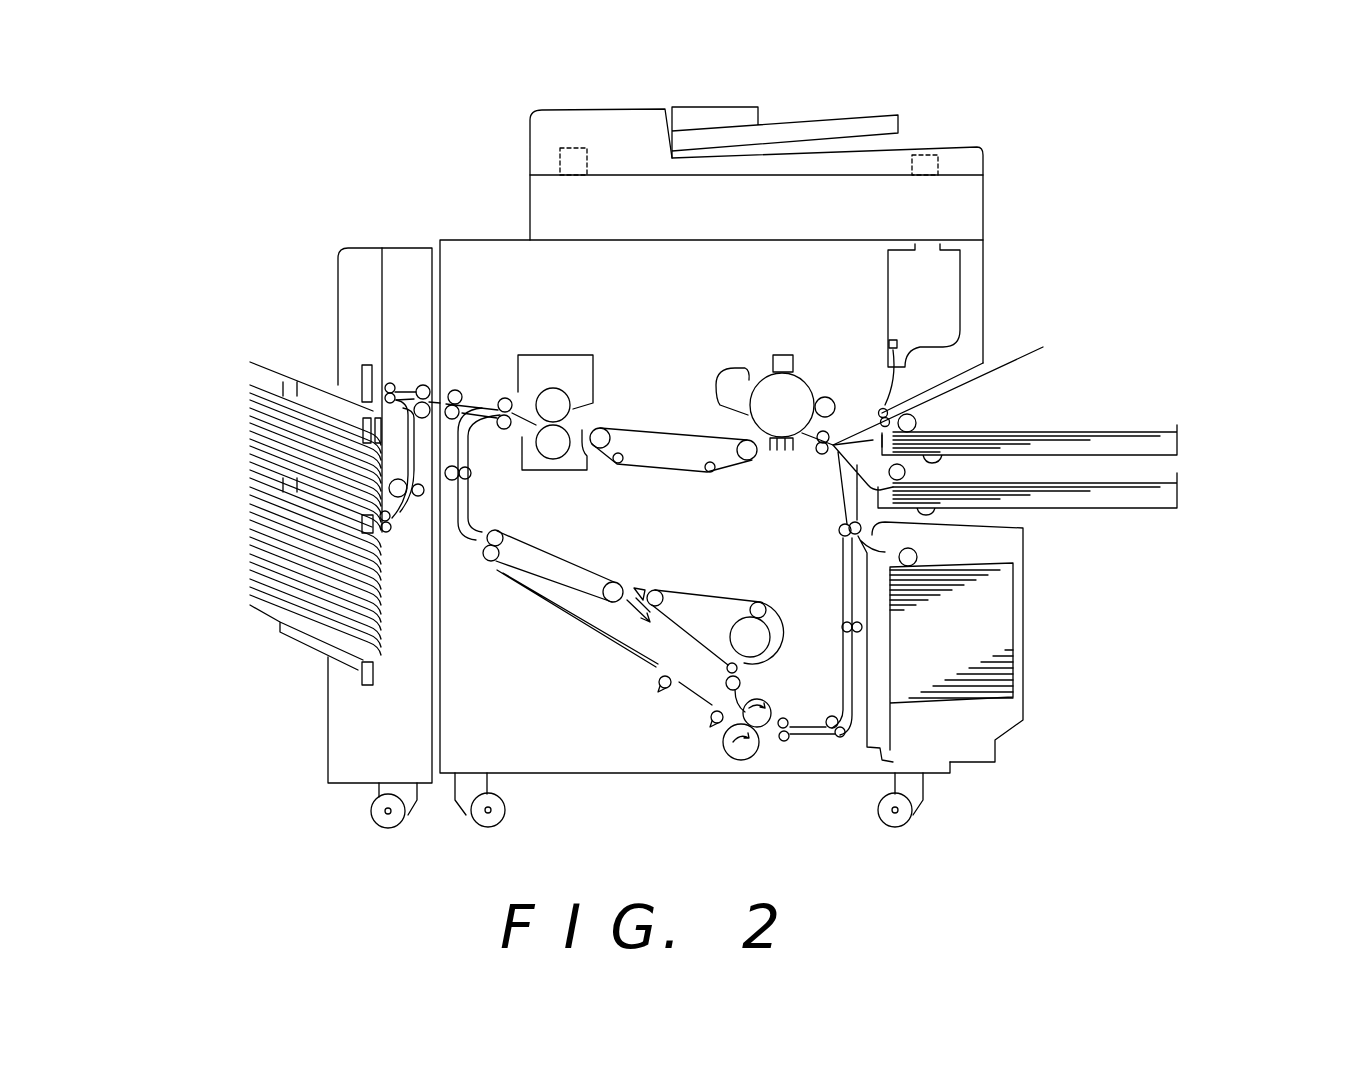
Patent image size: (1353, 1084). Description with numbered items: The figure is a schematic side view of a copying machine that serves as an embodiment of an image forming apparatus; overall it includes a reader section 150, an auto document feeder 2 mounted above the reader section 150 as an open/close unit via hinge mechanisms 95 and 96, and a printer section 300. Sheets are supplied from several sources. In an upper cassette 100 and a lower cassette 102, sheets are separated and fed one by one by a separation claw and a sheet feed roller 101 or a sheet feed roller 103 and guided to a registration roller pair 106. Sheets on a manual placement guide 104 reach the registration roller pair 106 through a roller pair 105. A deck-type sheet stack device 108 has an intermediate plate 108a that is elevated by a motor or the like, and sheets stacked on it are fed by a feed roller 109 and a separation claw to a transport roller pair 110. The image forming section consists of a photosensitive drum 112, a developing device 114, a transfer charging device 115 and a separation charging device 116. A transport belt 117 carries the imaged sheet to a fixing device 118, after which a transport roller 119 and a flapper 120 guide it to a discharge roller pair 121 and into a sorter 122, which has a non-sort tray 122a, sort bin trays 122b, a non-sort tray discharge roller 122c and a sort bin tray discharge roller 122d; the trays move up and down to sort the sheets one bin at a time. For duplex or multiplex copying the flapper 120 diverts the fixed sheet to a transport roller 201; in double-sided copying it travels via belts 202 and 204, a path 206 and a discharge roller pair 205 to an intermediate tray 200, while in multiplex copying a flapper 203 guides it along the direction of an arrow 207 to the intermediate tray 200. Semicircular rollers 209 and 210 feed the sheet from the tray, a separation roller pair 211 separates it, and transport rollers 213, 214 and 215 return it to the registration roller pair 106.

The auto document feeder 2 is at (643, 124).
The hinge mechanism 95 is at (928, 154).
The hinge mechanism 96 is at (575, 147).
The upper cassette 100 is at (1177, 443).
The sheet feed roller 101 is at (917, 420).
The lower cassette 102 is at (1177, 493).
The sheet feed roller 103 is at (906, 472).
The manual placement guide 104 is at (1010, 372).
The roller pair 105 is at (889, 408).
The registration roller pair 106 is at (822, 455).
The sheet stack device 108 is at (993, 642).
The intermediate plate 108a is at (990, 703).
The feed roller 109 is at (918, 555).
The transport roller pair 110 is at (838, 533).
The photosensitive drum 112 is at (762, 385).
The developing device 114 is at (832, 395).
The transfer charging device 115 is at (785, 452).
The separation charging device 116 is at (767, 452).
The transport belt 117 is at (672, 428).
The fixing device 118 is at (586, 386).
The transport roller 119 is at (503, 430).
The flapper 120 is at (498, 400).
The discharge roller pair 121 is at (455, 389).
The sorter 122 is at (273, 488).
The non-sort tray 122a is at (270, 363).
The sort bin trays 122b is at (250, 522).
The non-sort tray discharge roller 122c is at (386, 383).
The sort bin tray discharge roller 122d is at (387, 534).
The reader section 150 is at (978, 218).
The intermediate tray 200 is at (592, 633).
The transport roller 201 is at (466, 482).
The belt 202 is at (528, 550).
The flapper 203 is at (645, 588).
The belt 204 is at (720, 602).
The discharge roller pair 205 is at (728, 668).
The path 206 is at (772, 640).
The arrow 207 is at (647, 621).
The semicircular roller 209 is at (660, 685).
The semicircular roller 210 is at (712, 721).
The separation roller pair 211 is at (766, 762).
The transport roller 213 is at (790, 740).
The transport roller 214 is at (828, 722).
The transport roller 215 is at (840, 627).
The printer section 300 is at (1034, 261).